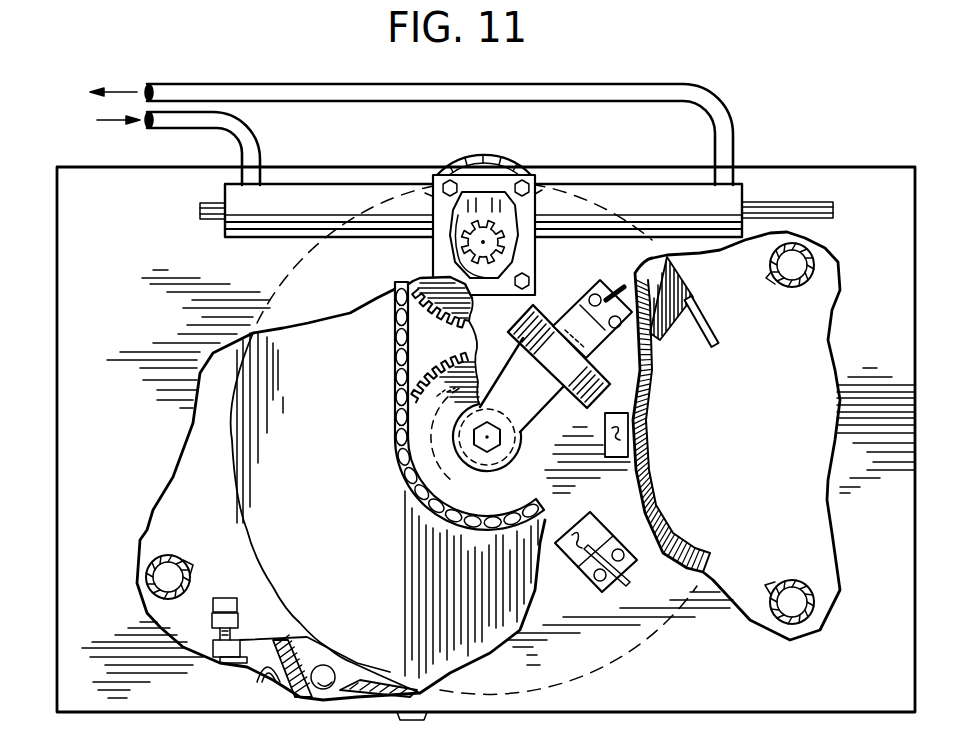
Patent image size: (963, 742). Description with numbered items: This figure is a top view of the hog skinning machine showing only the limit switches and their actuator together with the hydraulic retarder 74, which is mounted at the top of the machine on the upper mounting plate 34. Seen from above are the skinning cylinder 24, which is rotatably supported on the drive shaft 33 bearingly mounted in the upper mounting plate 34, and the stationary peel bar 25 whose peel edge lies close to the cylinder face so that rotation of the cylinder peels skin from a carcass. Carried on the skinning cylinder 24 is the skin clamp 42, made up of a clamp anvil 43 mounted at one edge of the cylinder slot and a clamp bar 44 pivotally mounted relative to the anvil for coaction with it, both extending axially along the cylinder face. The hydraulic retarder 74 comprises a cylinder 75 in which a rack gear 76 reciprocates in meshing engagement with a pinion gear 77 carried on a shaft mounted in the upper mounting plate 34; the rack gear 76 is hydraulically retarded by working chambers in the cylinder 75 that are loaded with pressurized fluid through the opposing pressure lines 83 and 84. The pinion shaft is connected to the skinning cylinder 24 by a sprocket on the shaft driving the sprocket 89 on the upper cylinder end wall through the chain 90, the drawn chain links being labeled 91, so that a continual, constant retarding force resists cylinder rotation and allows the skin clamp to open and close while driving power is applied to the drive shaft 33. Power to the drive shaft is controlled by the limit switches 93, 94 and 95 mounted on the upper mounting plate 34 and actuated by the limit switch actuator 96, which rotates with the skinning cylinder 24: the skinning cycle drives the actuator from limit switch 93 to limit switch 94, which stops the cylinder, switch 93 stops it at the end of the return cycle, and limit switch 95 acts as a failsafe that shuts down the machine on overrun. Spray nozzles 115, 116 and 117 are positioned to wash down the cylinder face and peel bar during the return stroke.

The skinning cylinder 24 is at (232, 483).
The peel bar 25 is at (350, 682).
The drive shaft 33 is at (457, 456).
The upper mounting plate 34 is at (787, 178).
The skin clamp 42 is at (678, 360).
The clamp anvil 43 is at (692, 283).
The clamp bar 44 is at (704, 321).
The hydraulic retarder 74 is at (593, 182).
The cylinder 75 is at (645, 183).
The rack gear 76 is at (487, 210).
The pinion gear 77 is at (473, 245).
The pressure line 83 is at (253, 148).
The pressure line 84 is at (353, 92).
The sprocket 89 is at (420, 437).
The chain 90 is at (397, 380).
The chain band 91 is at (397, 325).
The limit switch 93 is at (620, 597).
The limit switch 94 is at (590, 358).
The limit switch 95 is at (628, 432).
The limit switch actuator 96 is at (520, 387).
The spray nozzle 115 is at (168, 555).
The spray nozzle 116 is at (790, 287).
The spray nozzle 117 is at (807, 582).